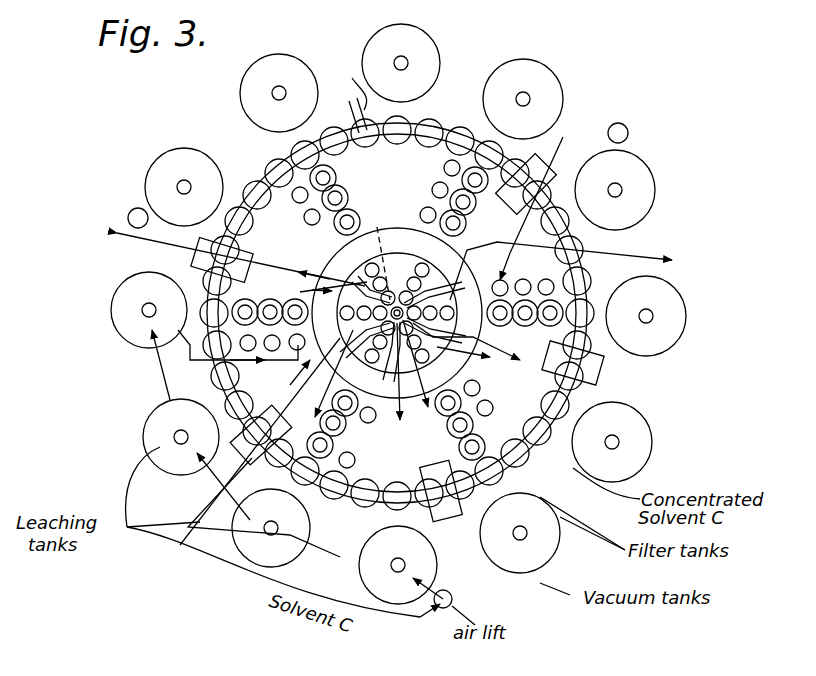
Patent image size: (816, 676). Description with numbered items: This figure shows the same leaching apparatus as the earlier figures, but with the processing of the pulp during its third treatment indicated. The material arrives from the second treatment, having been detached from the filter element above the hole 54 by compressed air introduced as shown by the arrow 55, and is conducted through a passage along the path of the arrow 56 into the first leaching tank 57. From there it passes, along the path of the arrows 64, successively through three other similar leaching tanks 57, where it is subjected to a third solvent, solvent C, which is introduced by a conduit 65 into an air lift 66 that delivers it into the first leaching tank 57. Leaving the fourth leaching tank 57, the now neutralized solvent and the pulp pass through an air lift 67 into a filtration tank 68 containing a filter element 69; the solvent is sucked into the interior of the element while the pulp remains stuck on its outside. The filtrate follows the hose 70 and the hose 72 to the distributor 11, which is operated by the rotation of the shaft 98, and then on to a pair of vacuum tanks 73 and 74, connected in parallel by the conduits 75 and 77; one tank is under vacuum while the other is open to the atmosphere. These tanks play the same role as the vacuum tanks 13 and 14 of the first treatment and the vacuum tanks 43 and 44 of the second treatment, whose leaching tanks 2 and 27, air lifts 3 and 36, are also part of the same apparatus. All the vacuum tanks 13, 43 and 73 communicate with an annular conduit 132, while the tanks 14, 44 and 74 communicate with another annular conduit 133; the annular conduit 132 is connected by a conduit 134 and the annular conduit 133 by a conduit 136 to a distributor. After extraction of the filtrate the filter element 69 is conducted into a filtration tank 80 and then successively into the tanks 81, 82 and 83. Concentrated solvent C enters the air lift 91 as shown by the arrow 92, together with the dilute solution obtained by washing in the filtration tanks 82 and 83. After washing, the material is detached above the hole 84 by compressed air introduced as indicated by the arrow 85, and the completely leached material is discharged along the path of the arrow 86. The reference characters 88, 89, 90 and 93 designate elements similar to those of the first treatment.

The leaching tank 2 is at (286, 57).
The air lift 3 is at (128, 216).
The distributor 11 is at (397, 313).
The vacuum tank 13 is at (300, 150).
The vacuum tank 14 is at (280, 165).
The leaching tank 27 is at (645, 173).
The air lift 36 is at (624, 124).
The vacuum tank 43 is at (618, 222).
The vacuum tank 44 is at (562, 484).
The hole 54 is at (365, 429).
The arrow 55 is at (260, 441).
The arrow 56 is at (370, 449).
The leaching tank 57 is at (125, 325).
The arrow 64 is at (165, 392).
The conduit 65 is at (245, 575).
The air lift 66 is at (453, 598).
The air lift 67 is at (328, 329).
The filtration tank 68 is at (290, 374).
The filter element 69 is at (287, 292).
The hose 70 is at (398, 315).
The hose 72 is at (318, 325).
The vacuum tank 73 is at (215, 230).
The vacuum tank 74 is at (527, 133).
The conduit 75 is at (377, 320).
The conduit 77 is at (624, 368).
The filtration tank 80 is at (382, 384).
The filtration tank 81 is at (462, 363).
The filtration tank 82 is at (515, 344).
The filtration tank 83 is at (432, 244).
The hole 84 is at (366, 263).
The arrow 85 is at (324, 234).
The arrow 86 is at (650, 248).
The valve 88 is at (420, 205).
The valve 89 is at (440, 205).
The valve 90 is at (517, 265).
The air lift 91 is at (515, 414).
The arrow 92 is at (495, 392).
The valve 93 is at (390, 371).
The shaft 98 is at (407, 266).
The annular conduit 132 is at (318, 128).
The annular conduit 133 is at (368, 140).
The conduit 134 is at (350, 118).
The conduit 136 is at (348, 82).